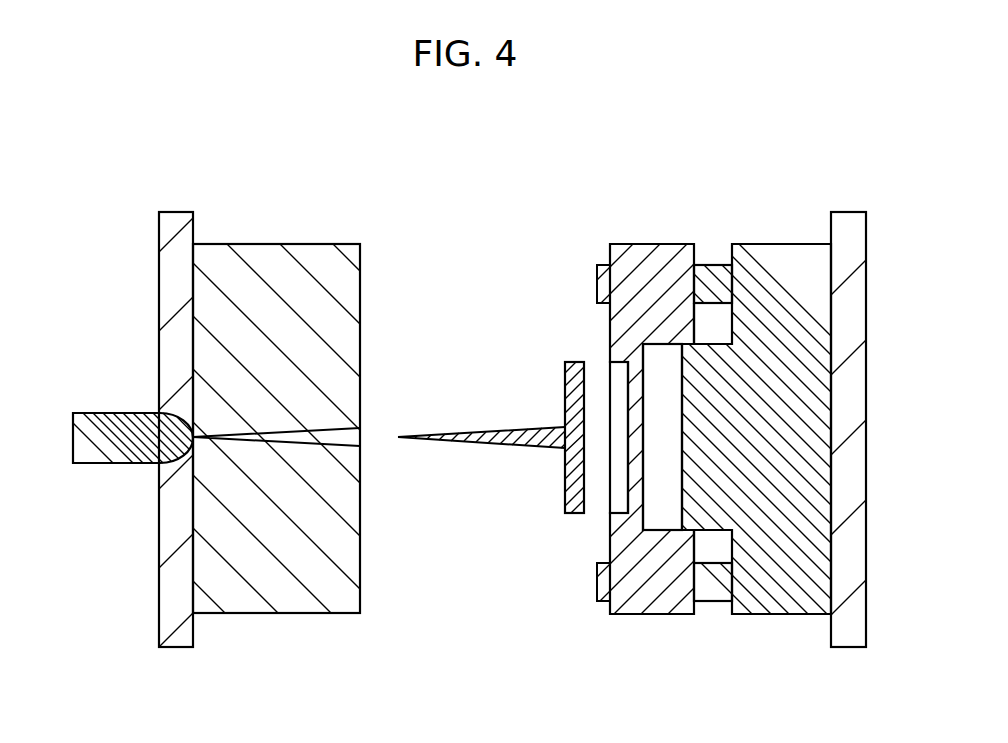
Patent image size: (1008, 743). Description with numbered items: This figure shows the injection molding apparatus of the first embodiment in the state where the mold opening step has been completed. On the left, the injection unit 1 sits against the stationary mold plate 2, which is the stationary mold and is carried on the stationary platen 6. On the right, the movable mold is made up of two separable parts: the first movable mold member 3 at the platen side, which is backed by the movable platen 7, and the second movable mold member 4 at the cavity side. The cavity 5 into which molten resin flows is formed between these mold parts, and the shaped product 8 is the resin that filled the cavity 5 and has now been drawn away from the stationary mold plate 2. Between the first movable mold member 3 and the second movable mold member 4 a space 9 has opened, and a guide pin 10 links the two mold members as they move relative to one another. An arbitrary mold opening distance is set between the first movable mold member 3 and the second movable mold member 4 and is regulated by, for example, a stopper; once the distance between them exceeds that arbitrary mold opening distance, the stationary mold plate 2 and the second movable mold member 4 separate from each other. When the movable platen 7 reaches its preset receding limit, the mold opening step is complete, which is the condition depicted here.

The injection unit 1 is at (100, 448).
The stationary mold plate 2 is at (248, 609).
The first movable mold member 3 is at (763, 608).
The second movable mold member 4 is at (643, 603).
The cavity 5 is at (620, 374).
The stationary platen 6 is at (170, 609).
The movable platen 7 is at (845, 252).
The shaped product 8 is at (572, 363).
The space 9 is at (668, 368).
The guide pin 10 is at (717, 273).